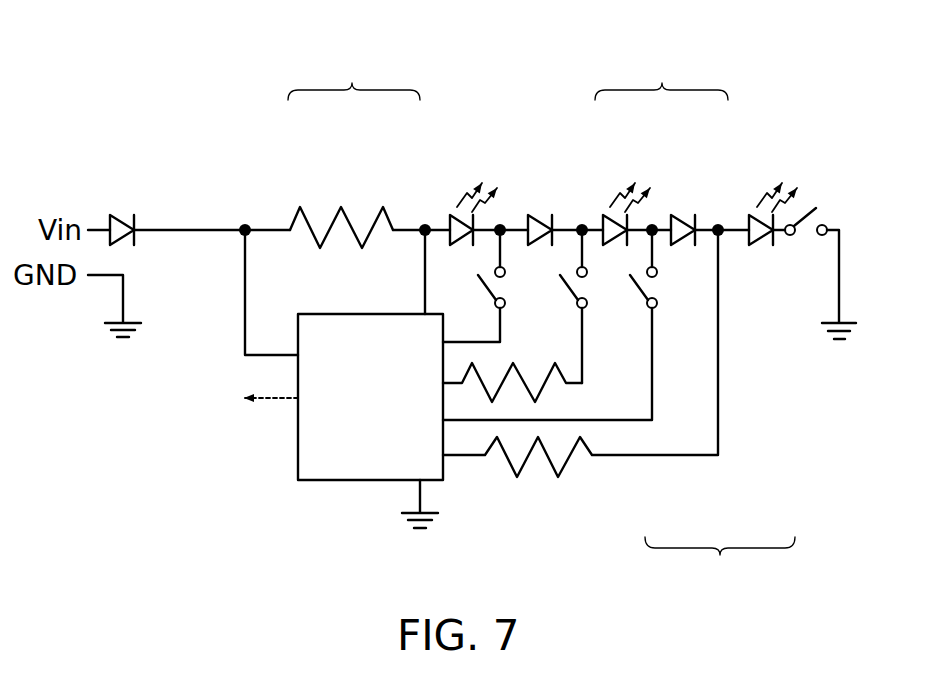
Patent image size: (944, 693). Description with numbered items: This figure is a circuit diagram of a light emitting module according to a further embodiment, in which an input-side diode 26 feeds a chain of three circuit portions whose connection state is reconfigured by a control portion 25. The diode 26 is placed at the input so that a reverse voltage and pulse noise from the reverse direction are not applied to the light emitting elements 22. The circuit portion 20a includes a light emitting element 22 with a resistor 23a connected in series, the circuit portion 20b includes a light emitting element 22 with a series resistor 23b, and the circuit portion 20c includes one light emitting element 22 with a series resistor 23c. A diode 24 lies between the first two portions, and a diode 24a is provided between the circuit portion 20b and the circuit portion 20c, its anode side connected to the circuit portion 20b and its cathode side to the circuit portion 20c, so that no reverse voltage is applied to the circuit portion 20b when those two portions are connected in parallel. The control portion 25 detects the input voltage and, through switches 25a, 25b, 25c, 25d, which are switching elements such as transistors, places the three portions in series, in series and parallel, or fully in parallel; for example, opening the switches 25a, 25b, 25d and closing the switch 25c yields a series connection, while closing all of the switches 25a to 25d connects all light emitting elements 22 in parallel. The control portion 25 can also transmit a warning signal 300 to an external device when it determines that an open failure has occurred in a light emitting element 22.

The diode 26 is at (123, 216).
The control portion 25 is at (338, 482).
The warning signal 300 is at (272, 401).
The circuit portion 20a is at (354, 71).
The circuit portion 20b is at (661, 71).
The circuit portion 20c is at (720, 565).
The resistor 23a is at (328, 227).
The resistor 23b is at (515, 363).
The resistor 23c is at (563, 458).
The light emitting element 22 is at (452, 212).
The diode 24 is at (535, 218).
The diode 24a is at (686, 226).
The switch 25a is at (513, 284).
The switch 25b is at (598, 294).
The switch 25c is at (841, 207).
The switch 25d is at (664, 294).